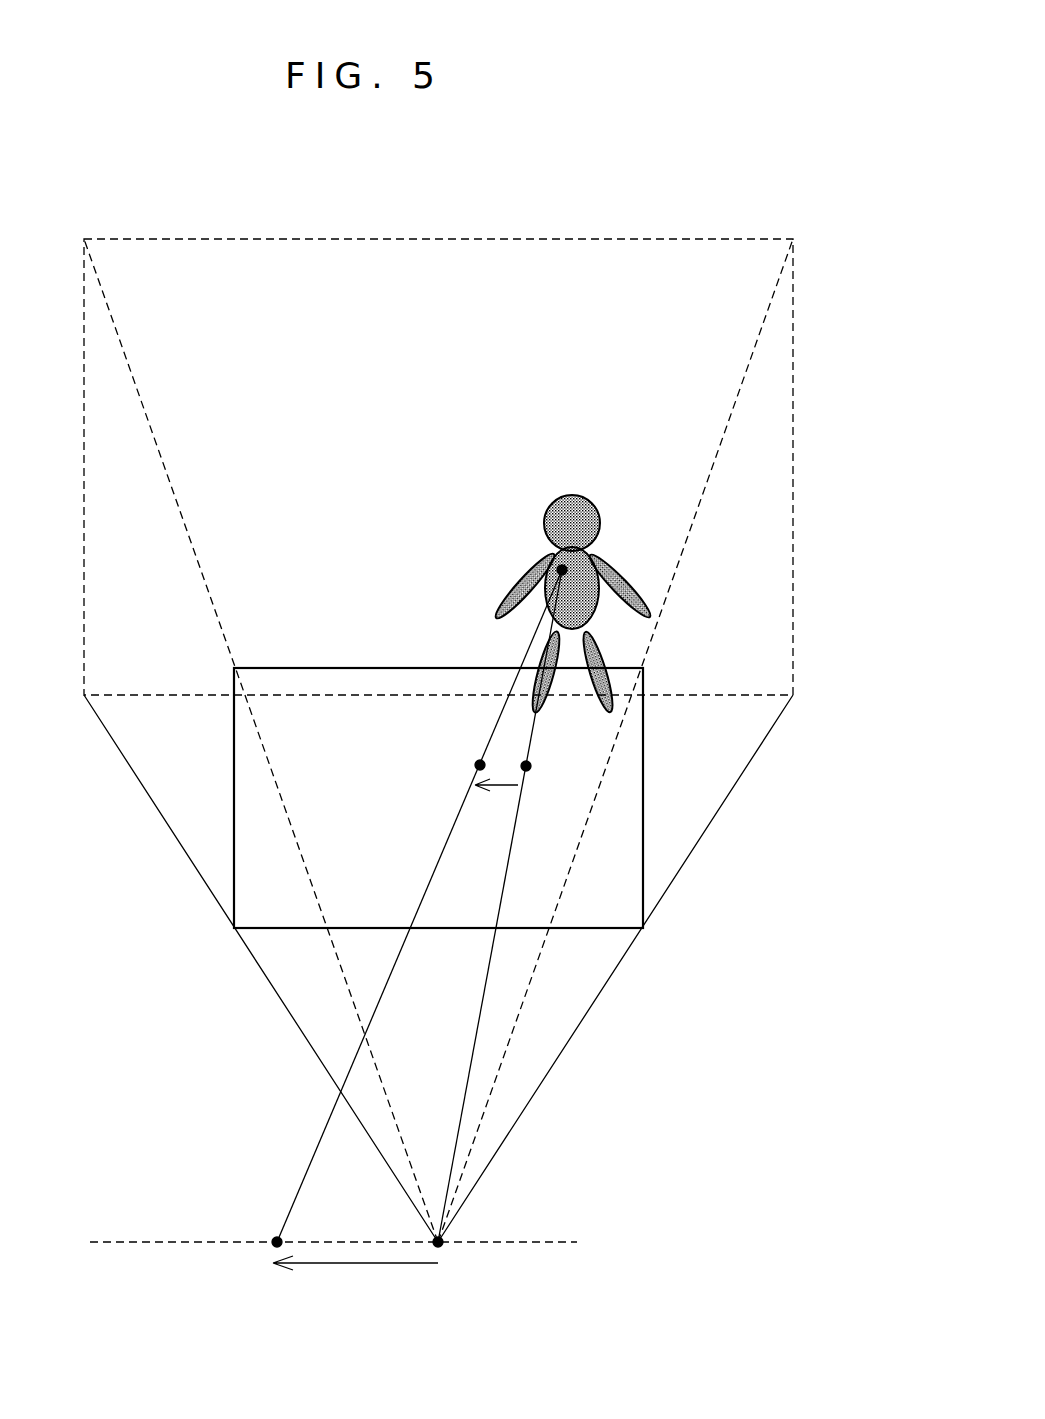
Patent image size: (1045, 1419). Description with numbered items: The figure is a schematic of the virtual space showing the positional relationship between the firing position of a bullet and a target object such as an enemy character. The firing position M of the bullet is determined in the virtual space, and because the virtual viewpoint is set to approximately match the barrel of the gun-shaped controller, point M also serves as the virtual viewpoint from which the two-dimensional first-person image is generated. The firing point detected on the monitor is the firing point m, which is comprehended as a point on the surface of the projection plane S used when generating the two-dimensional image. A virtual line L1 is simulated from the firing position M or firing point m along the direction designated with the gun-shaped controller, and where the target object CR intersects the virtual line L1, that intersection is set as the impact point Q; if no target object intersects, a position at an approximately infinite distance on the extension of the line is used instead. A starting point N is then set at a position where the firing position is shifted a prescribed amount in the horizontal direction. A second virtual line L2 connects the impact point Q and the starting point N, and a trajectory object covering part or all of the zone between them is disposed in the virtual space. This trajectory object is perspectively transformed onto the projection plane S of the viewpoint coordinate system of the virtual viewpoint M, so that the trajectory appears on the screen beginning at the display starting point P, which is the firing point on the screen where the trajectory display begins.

The target object CR is at (577, 493).
The impact point Q is at (566, 568).
The firing point on the screen P is at (480, 765).
The firing point m is at (526, 766).
The projection plane S is at (643, 866).
The virtual line L1 is at (488, 992).
The virtual line L2 is at (387, 982).
The starting point N is at (277, 1242).
The firing position M is at (438, 1242).